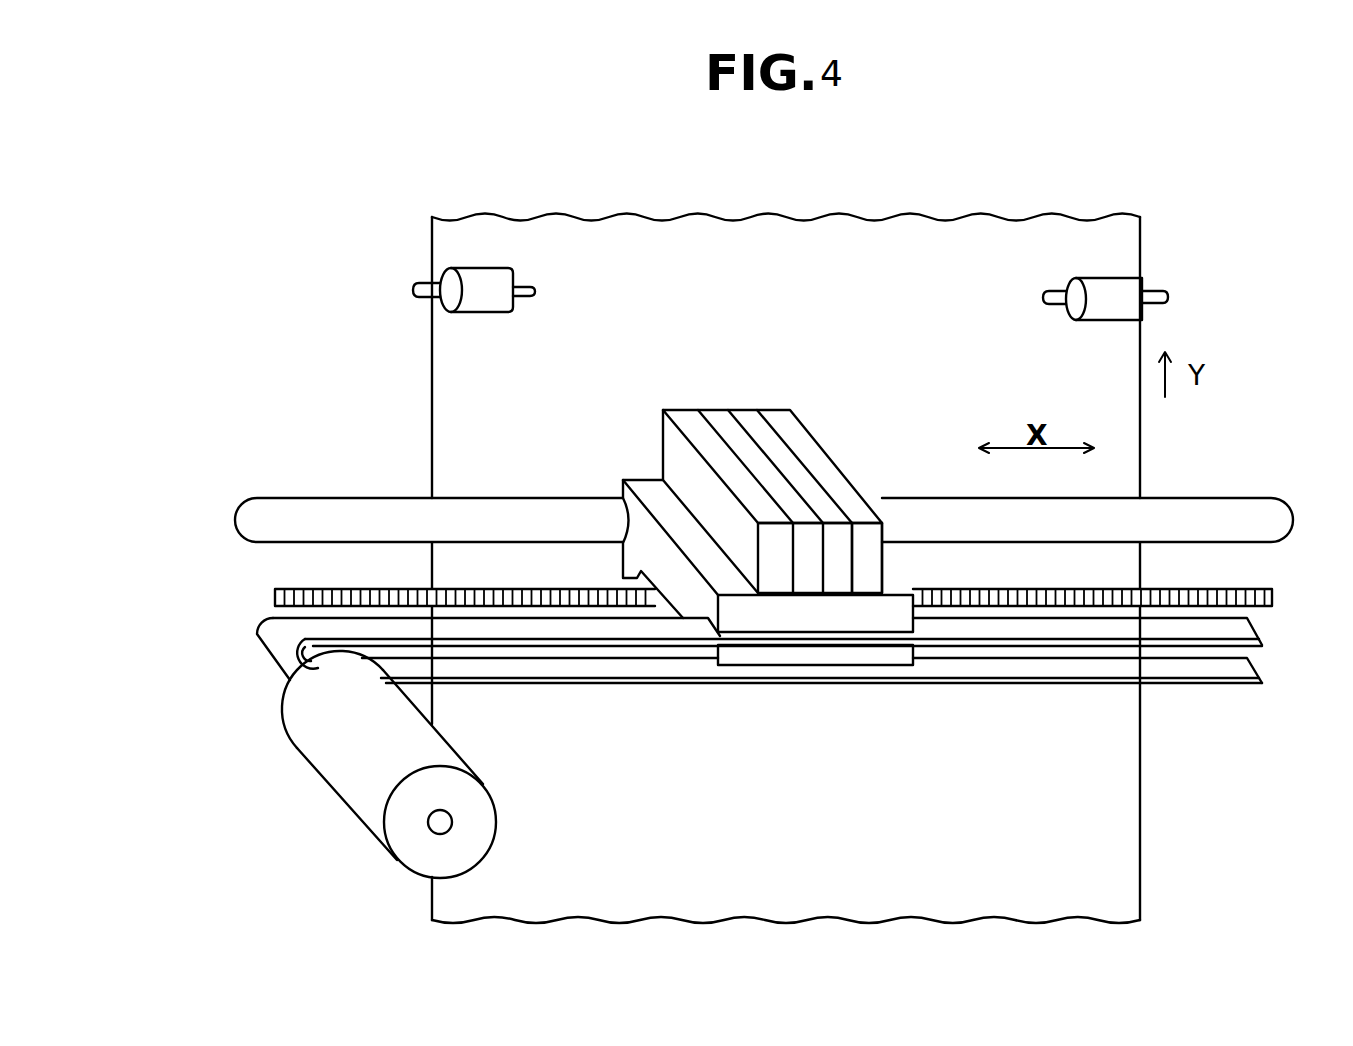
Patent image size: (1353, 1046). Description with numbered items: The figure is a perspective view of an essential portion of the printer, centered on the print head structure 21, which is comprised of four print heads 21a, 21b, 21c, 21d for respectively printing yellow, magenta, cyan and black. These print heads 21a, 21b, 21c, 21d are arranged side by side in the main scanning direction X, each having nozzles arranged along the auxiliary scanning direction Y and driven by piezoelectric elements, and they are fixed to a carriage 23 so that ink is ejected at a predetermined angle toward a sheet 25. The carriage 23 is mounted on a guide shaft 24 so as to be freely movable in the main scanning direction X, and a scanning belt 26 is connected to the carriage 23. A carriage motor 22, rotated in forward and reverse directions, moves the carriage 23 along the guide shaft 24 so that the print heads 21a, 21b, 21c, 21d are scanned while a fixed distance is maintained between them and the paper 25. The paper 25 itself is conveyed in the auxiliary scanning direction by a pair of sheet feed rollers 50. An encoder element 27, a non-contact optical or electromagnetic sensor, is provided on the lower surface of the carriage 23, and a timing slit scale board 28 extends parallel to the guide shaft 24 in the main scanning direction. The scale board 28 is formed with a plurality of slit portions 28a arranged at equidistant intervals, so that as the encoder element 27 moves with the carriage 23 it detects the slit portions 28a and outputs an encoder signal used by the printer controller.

The print head structure 21 is at (778, 427).
The print head 21a is at (683, 407).
The print head 21b is at (723, 407).
The print head 21c is at (752, 407).
The print head 21d is at (815, 456).
The carriage motor 22 is at (319, 752).
The carriage 23 is at (653, 478).
The guide shaft 24 is at (389, 497).
The sheet 25 is at (1138, 797).
The scanning belt 26 is at (696, 672).
The encoder element 27 is at (670, 586).
The timing slit scale board 28 is at (273, 603).
The slit portions 28a is at (458, 588).
The sheet feed rollers 50 is at (428, 270).